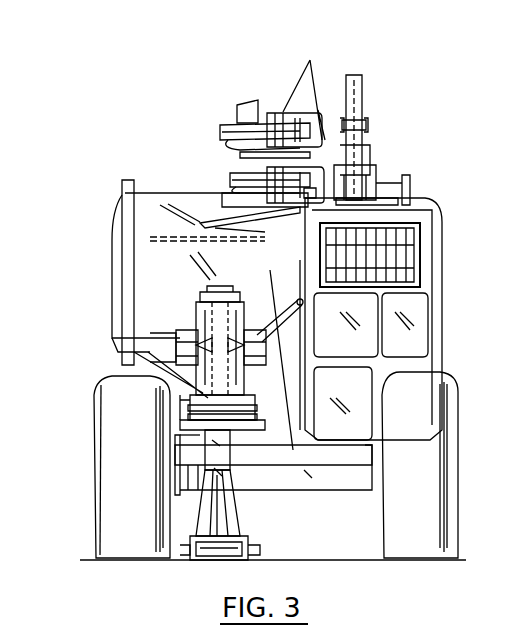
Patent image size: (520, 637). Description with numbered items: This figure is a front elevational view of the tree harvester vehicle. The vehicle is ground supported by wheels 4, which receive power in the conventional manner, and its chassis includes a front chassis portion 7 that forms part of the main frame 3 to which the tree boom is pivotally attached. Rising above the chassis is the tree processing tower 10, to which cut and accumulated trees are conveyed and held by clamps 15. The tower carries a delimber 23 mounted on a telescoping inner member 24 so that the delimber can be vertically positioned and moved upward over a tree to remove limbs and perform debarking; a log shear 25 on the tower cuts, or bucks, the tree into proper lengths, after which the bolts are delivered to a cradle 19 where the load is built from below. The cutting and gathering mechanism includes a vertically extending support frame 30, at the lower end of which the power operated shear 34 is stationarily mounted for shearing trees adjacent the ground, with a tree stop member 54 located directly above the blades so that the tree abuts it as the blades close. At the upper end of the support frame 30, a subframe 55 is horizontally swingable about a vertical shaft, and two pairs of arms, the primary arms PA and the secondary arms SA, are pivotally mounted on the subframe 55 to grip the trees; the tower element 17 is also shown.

The main frame 3 is at (312, 485).
The wheels 4 is at (98, 505).
The front chassis portion 7 is at (355, 484).
The tree processing tower 10 is at (319, 65).
The clamps 15 is at (232, 183).
The mast 17 is at (354, 110).
The cradle 19 is at (149, 181).
The delimber 23 is at (225, 127).
The telescoping inner member 24 is at (292, 118).
The log shear 25 is at (215, 226).
The support frame 30 is at (238, 455).
The power operated shear 34 is at (266, 541).
The tree stop member 54 is at (240, 511).
The subframe 55 is at (247, 294).
The primary arms PA is at (191, 330).
The secondary arms SA is at (248, 417).